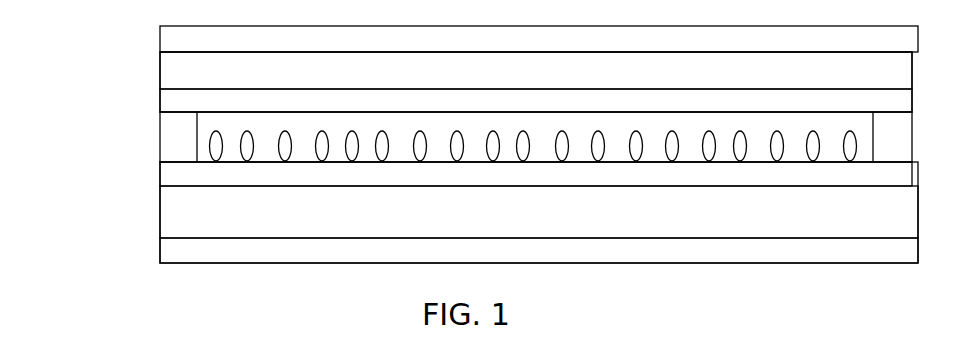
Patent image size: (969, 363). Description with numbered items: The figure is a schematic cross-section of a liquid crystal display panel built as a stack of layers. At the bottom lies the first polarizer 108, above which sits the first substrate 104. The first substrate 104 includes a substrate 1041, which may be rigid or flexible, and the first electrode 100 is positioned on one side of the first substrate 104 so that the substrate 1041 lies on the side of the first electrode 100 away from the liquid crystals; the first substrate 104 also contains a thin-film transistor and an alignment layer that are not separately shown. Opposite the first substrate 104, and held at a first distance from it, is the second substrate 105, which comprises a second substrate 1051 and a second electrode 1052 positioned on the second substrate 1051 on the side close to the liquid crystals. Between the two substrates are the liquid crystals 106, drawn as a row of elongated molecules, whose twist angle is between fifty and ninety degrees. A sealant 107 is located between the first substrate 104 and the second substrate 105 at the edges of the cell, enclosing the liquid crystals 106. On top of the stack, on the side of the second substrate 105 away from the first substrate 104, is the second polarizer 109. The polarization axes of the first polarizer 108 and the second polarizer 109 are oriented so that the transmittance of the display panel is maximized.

The second polarizer 109 is at (160, 38).
The second substrate 105 is at (84, 55).
The second substrate 1051 is at (160, 68).
The second electrode 1052 is at (160, 102).
The sealant 107 is at (160, 128).
The liquid crystals 106 is at (210, 140).
The first substrate 104 is at (84, 183).
The first electrode 100 is at (162, 173).
The substrate 1041 is at (160, 222).
The first polarizer 108 is at (162, 263).